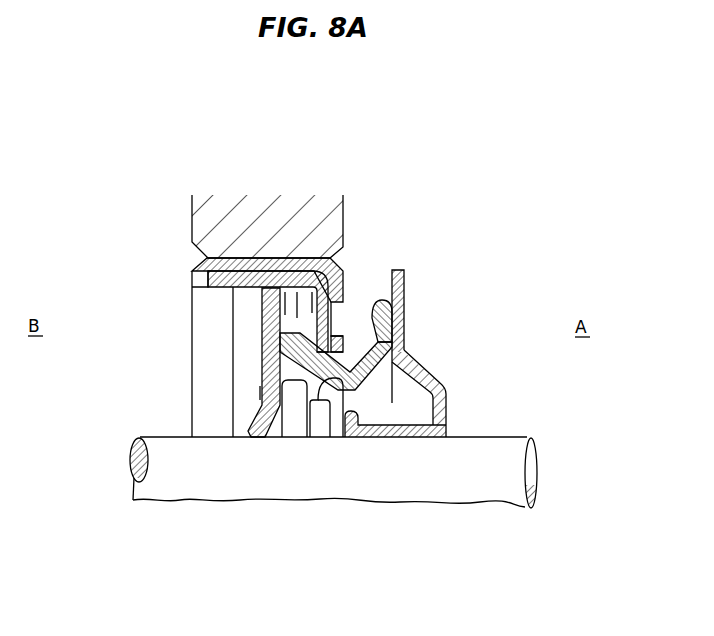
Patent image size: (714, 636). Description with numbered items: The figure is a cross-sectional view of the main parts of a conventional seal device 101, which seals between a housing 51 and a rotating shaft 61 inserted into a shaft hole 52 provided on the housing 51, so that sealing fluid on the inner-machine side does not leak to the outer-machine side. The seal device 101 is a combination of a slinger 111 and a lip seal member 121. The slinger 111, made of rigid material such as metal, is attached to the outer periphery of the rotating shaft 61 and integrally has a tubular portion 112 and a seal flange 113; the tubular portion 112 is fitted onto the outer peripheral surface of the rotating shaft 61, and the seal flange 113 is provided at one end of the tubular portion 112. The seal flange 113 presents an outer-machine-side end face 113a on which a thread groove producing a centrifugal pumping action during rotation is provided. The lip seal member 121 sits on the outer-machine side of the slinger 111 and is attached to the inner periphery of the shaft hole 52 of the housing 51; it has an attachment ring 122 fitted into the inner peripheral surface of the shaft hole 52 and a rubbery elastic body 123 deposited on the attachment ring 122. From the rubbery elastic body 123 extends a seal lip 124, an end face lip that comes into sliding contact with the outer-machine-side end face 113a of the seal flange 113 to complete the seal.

The housing 51 is at (332, 212).
The shaft hole 52 is at (340, 263).
The rotating shaft 61 is at (477, 496).
The seal device 101 is at (187, 270).
The slinger 111 is at (449, 393).
The tubular portion 112 is at (392, 434).
The seal flange 113 is at (398, 292).
The outer-machine-side end face 113a is at (392, 311).
The lip seal member 121 is at (256, 393).
The attachment ring 122 is at (258, 277).
The rubbery elastic body 123 is at (270, 357).
The seal lip 124 is at (392, 333).